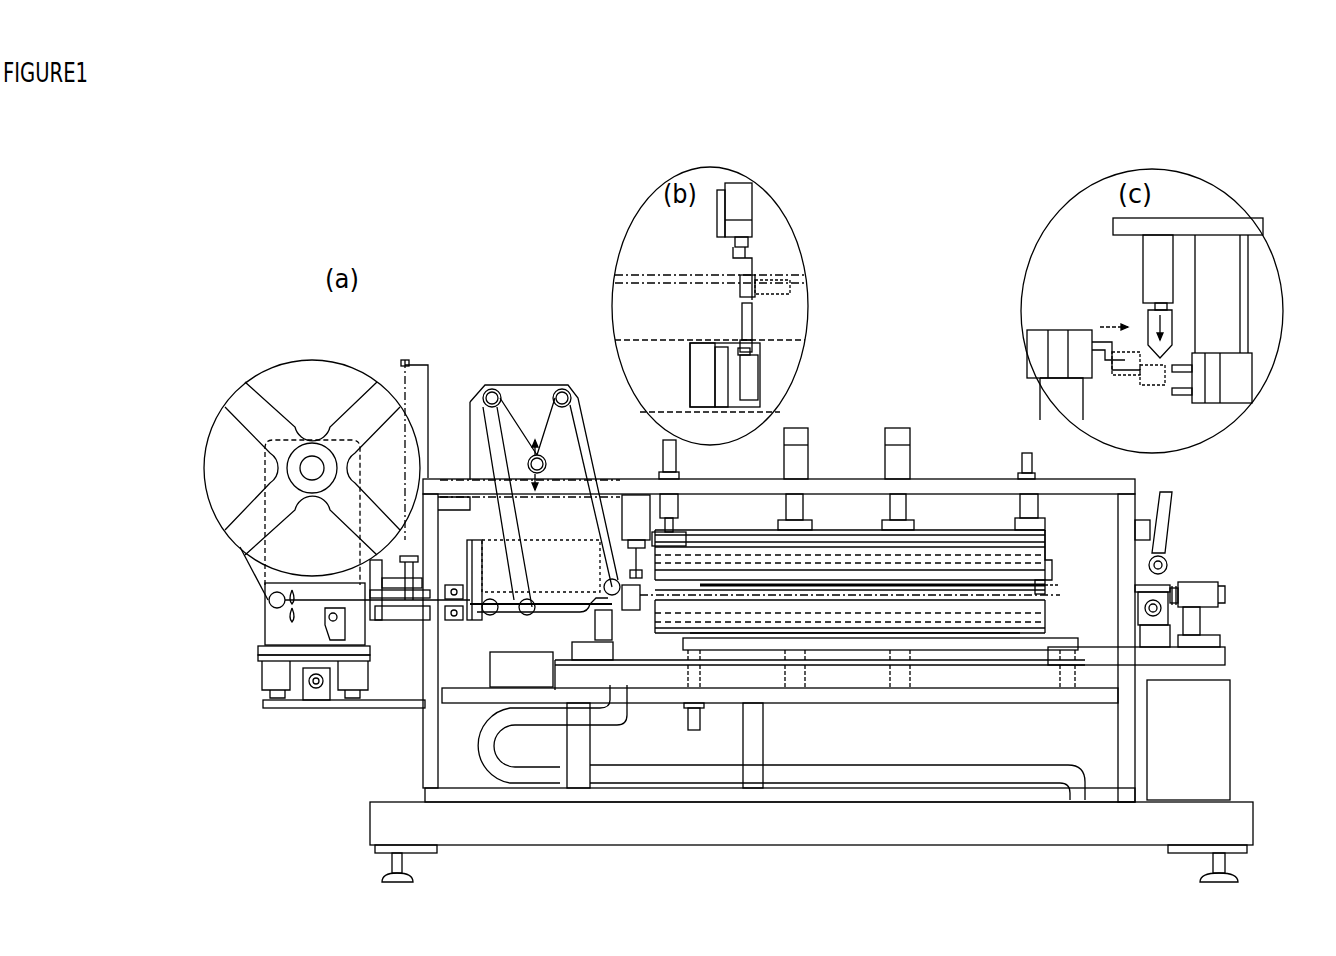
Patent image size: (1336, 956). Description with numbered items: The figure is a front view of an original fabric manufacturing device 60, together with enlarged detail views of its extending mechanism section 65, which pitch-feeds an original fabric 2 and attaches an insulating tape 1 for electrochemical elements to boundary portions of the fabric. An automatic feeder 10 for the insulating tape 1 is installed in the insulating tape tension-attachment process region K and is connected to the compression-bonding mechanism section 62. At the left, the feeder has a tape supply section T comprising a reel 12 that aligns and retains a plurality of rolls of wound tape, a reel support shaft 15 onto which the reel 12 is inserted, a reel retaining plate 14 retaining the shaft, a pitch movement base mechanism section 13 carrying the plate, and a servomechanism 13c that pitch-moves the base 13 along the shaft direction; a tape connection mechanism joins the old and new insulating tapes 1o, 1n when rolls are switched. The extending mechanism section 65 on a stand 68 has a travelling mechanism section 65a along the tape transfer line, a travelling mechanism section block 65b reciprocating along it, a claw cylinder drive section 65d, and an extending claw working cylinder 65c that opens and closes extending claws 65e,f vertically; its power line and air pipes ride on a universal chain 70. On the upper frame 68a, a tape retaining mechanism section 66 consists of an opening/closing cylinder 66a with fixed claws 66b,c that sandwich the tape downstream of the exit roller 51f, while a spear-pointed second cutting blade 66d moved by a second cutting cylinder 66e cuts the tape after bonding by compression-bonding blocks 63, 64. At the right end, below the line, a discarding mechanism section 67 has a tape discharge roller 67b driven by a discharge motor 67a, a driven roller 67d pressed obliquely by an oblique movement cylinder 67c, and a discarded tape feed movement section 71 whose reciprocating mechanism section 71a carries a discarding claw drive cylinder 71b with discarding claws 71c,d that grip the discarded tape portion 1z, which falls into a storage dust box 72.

The insulating tape 1 is at (300, 362).
The new insulating tape 1n is at (425, 605).
The old insulating tape 1o is at (462, 612).
The discarded tape portion 1z is at (1060, 588).
The original fabric 2 is at (940, 585).
The automatic feeder 10 is at (455, 368).
The reel 12 is at (232, 390).
The pitch movement base mechanism section 13 is at (253, 672).
The servomechanism 13c is at (296, 702).
The reel retaining plate 14 is at (270, 588).
The reel support shaft 15 is at (298, 468).
The tape supply section T is at (208, 553).
The exit roller 51f is at (612, 578).
The original fabric manufacturing device 60 is at (932, 410).
The compression-bonding mechanism section 62 is at (966, 527).
The compression-bonding block 63 is at (1020, 570).
The compression-bonding block 64 is at (1020, 625).
The extending mechanism section 65 is at (588, 627).
The travelling mechanism section 65a is at (1012, 672).
The travelling mechanism section block 65b is at (590, 655).
The extending claw working cylinder 65c is at (632, 610).
The claw cylinder drive section 65d is at (600, 618).
The extending claws 65e,f is at (752, 320).
The tape retaining mechanism section 66 is at (612, 578).
The opening/closing cylinder 66a is at (740, 210).
The fixed claws 66b,c is at (762, 273).
The second cutting blade 66d is at (640, 575).
The second cutting cylinder 66e is at (636, 518).
The discarding mechanism section 67 is at (1266, 530).
The discharge motor 67a is at (1160, 648).
The tape discharge roller 67b is at (1140, 608).
The oblique movement cylinder 67c is at (1172, 495).
The driven roller 67d is at (1166, 520).
The stand 68 is at (1112, 820).
The upper frame 68a is at (945, 487).
The universal chain 70 is at (488, 740).
The discarded tape feed movement section 71 is at (1212, 618).
The reciprocating mechanism section 71a is at (1222, 658).
The discarding claw drive cylinder 71b is at (1220, 590).
The discarding claws 71c,d is at (1178, 580).
The storage dust box 72 is at (1220, 735).
The insulating tape tension-attachment process region K is at (840, 482).